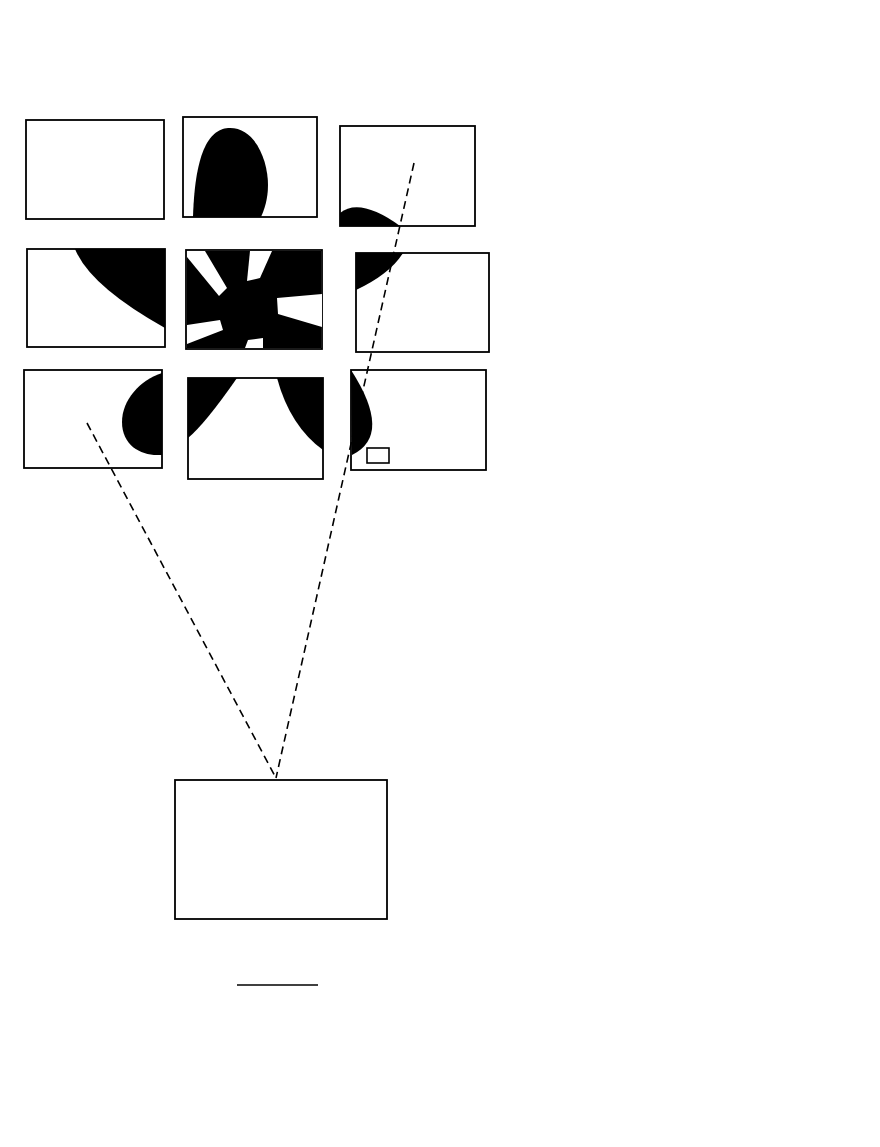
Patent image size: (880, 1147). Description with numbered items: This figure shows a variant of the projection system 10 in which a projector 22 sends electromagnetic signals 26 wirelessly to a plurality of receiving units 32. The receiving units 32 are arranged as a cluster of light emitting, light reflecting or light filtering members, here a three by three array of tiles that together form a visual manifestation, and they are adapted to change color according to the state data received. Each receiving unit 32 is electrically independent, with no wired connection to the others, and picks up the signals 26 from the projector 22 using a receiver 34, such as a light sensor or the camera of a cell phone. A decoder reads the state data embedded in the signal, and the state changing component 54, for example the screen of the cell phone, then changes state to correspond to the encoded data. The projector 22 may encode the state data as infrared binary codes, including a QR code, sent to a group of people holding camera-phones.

The projection system 10 is at (456, 75).
The projector 22 is at (387, 823).
The electromagnetic signals 26 is at (302, 672).
The receiving unit 32 is at (453, 470).
The receiver 34 is at (373, 463).
The state changing component 54 is at (467, 413).